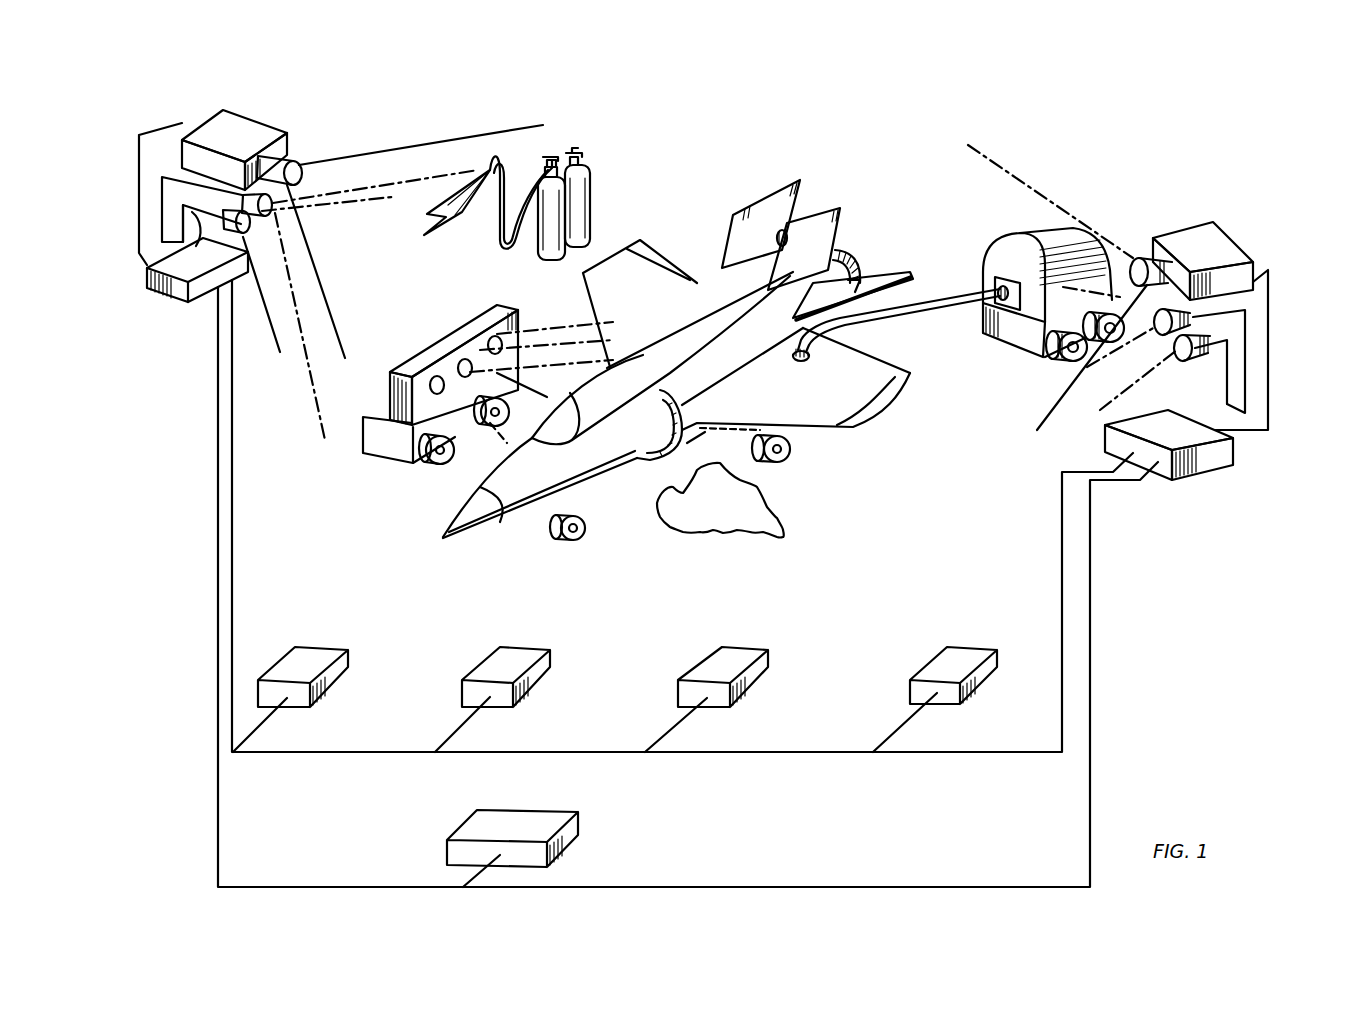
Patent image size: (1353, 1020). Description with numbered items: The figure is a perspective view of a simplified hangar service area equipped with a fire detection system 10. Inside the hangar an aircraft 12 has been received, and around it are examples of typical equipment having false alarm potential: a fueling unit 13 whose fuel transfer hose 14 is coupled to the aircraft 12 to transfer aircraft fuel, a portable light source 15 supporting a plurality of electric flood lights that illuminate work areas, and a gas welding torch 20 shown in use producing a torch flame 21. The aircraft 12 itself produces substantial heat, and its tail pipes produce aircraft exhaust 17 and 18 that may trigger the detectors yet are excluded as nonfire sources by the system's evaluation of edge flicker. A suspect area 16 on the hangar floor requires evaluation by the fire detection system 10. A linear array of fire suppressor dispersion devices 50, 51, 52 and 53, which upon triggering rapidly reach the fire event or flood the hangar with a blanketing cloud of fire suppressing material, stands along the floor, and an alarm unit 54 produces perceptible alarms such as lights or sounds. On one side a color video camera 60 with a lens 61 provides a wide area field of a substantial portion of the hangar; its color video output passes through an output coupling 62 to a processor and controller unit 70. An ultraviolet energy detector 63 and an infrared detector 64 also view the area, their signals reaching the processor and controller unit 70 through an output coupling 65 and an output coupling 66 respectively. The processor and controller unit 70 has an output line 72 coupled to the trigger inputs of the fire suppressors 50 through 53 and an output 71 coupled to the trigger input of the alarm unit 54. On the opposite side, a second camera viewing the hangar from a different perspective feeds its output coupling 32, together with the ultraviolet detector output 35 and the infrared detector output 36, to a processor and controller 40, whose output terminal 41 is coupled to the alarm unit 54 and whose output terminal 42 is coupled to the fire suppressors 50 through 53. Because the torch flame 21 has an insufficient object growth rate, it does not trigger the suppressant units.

The fire detection system 10 is at (1070, 168).
The aircraft 12 is at (673, 275).
The fueling unit 13 is at (1028, 248).
The fuel transfer hose 14 is at (818, 322).
The portable light source 15 is at (415, 350).
The suspect area 16 is at (780, 500).
The aircraft exhaust 17 is at (790, 235).
The aircraft exhaust 18 is at (858, 268).
The gas welding torch 20 is at (593, 210).
The torch flame 21 is at (470, 218).
The output coupling 32 is at (165, 140).
The output 35 is at (190, 220).
The output 36 is at (160, 192).
The processor and controller 40 is at (175, 292).
The output terminal 41 is at (218, 448).
The output terminal 42 is at (232, 448).
The fire suppressor dispersion device 50 is at (320, 650).
The fire suppressor dispersion device 51 is at (520, 650).
The fire suppressor dispersion device 52 is at (740, 650).
The fire suppressor dispersion device 53 is at (980, 650).
The alarm unit 54 is at (530, 815).
The color video camera 60 is at (1188, 240).
The lens 61 is at (1137, 258).
The output coupling 62 is at (1270, 360).
The ultraviolet energy detector 63 is at (1160, 330).
The infrared detector 64 is at (1183, 358).
The output coupling 65 is at (1250, 312).
The output coupling 66 is at (1223, 382).
The processor and controller unit 70 is at (1207, 468).
The output 71 is at (1090, 527).
The output line 72 is at (1060, 527).